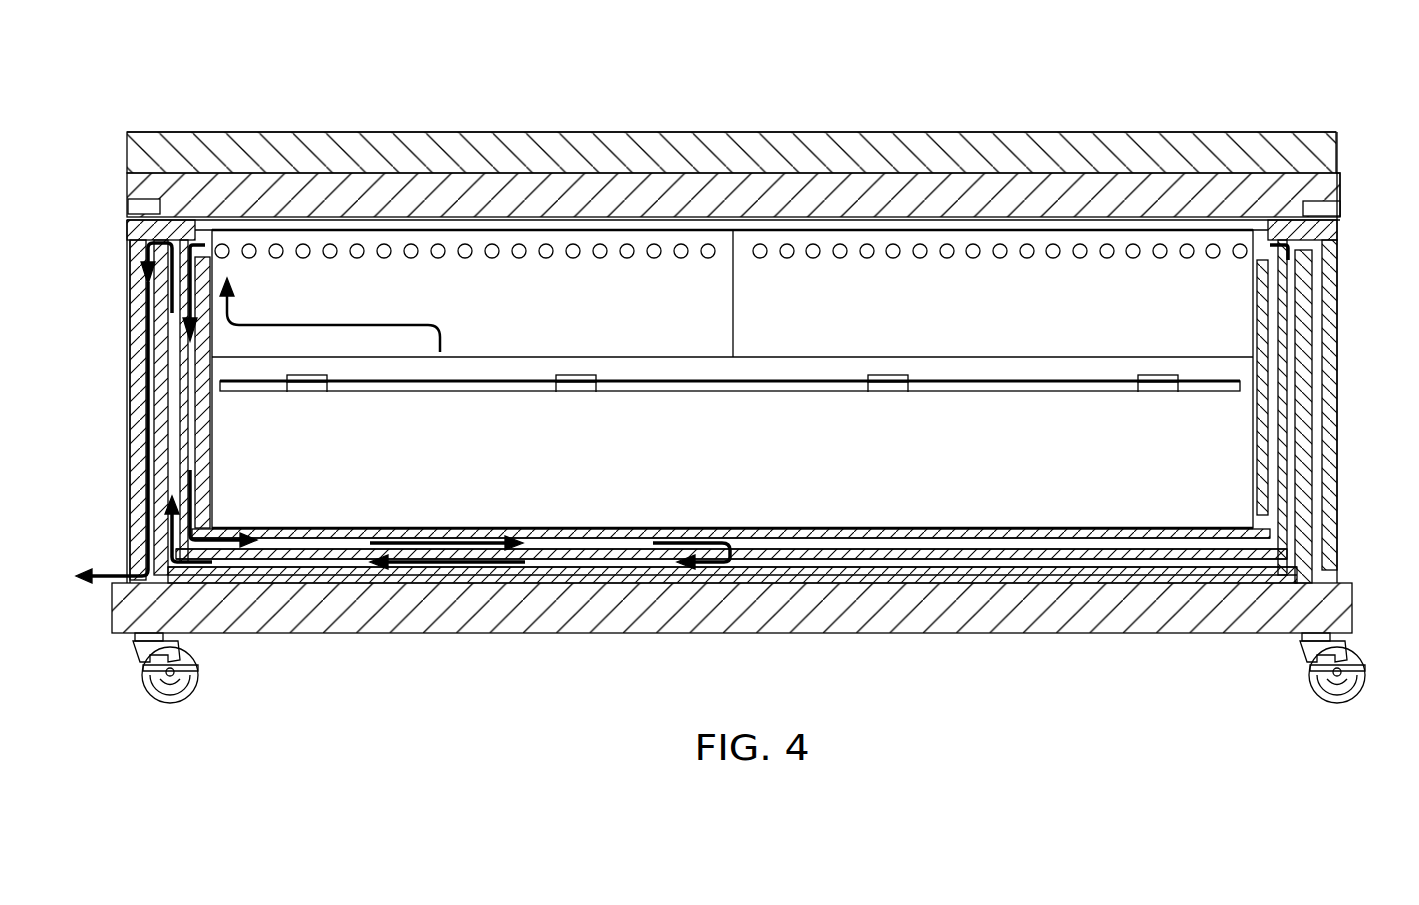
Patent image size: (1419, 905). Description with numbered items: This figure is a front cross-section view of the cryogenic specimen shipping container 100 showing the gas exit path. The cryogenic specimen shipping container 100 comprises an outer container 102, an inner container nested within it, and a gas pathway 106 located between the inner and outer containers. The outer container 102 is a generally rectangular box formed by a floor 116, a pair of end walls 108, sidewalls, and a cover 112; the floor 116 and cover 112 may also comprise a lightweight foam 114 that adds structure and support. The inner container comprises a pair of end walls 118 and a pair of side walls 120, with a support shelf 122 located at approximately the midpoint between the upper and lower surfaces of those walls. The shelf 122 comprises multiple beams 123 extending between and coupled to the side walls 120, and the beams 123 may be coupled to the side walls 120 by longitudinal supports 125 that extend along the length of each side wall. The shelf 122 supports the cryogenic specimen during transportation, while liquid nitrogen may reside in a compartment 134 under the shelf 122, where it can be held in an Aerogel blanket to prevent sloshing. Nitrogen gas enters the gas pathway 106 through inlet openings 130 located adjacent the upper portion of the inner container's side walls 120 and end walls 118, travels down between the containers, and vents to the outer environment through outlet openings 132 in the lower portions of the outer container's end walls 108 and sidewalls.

The cryogenic specimen shipping container 100 is at (920, 70).
The outer container 102 is at (565, 110).
The gas pathway 106 is at (200, 218).
The end walls 108 is at (1338, 300).
The cover 112 is at (316, 130).
The lightweight foam 114 is at (1330, 160).
The floor 116 is at (1100, 530).
The end walls 118 is at (1258, 302).
The side walls 120 is at (490, 345).
The support shelf 122 is at (820, 342).
The beams 123 is at (570, 376).
The longitudinal supports 125 is at (1025, 392).
The inlet openings 130 is at (1078, 258).
The outlet openings 132 is at (118, 562).
The compartment 134 is at (708, 478).